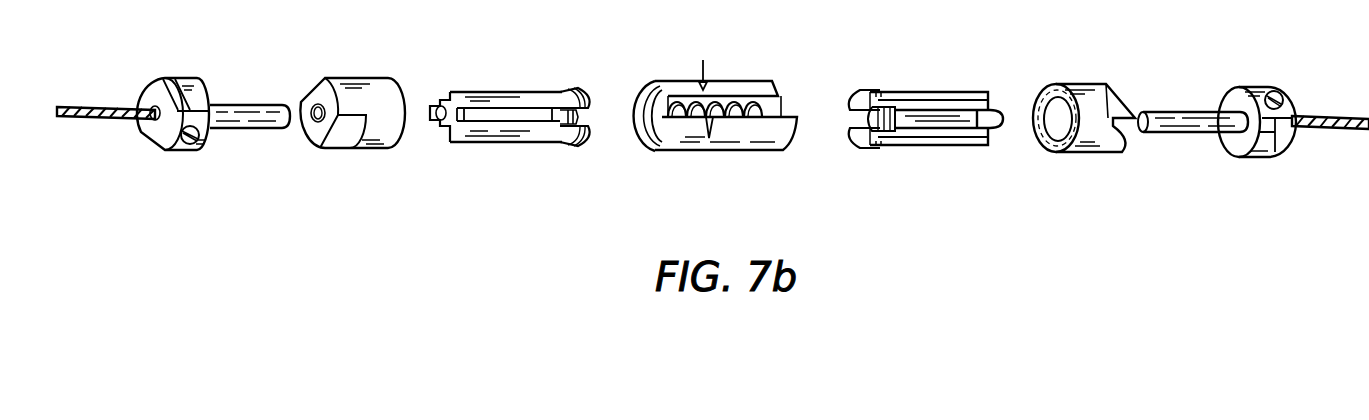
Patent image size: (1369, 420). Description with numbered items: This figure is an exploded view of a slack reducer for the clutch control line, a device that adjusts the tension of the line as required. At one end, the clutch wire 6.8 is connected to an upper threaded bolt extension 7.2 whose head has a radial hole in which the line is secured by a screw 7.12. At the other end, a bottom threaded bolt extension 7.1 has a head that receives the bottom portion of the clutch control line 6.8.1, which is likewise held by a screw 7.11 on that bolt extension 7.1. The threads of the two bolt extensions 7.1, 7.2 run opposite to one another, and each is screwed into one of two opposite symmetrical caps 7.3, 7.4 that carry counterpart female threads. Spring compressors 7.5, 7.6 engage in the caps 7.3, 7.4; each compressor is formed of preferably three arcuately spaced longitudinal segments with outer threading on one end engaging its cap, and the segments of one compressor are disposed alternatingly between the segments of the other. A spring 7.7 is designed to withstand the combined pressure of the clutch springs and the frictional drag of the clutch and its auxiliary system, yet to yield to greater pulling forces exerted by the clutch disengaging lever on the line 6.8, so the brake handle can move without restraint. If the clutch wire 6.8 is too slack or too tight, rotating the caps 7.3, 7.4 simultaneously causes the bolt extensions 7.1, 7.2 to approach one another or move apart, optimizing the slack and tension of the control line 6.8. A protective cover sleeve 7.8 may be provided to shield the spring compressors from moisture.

The bottom portion of the clutch control line 6.8.1 is at (88, 117).
The bottom threaded bolt extension 7.1 is at (188, 78).
The screw 7.11 is at (198, 142).
The cap 7.3 is at (342, 78).
The spring compressor 7.6 is at (478, 90).
The spring 7.7 is at (669, 100).
The protective cover sleeve 7.8 is at (760, 97).
The spring compressor 7.5 is at (937, 95).
The cap 7.4 is at (1103, 84).
The upper threaded bolt extension 7.2 is at (1232, 158).
The screw 7.12 is at (1283, 92).
The clutch wire 6.8 is at (1345, 130).